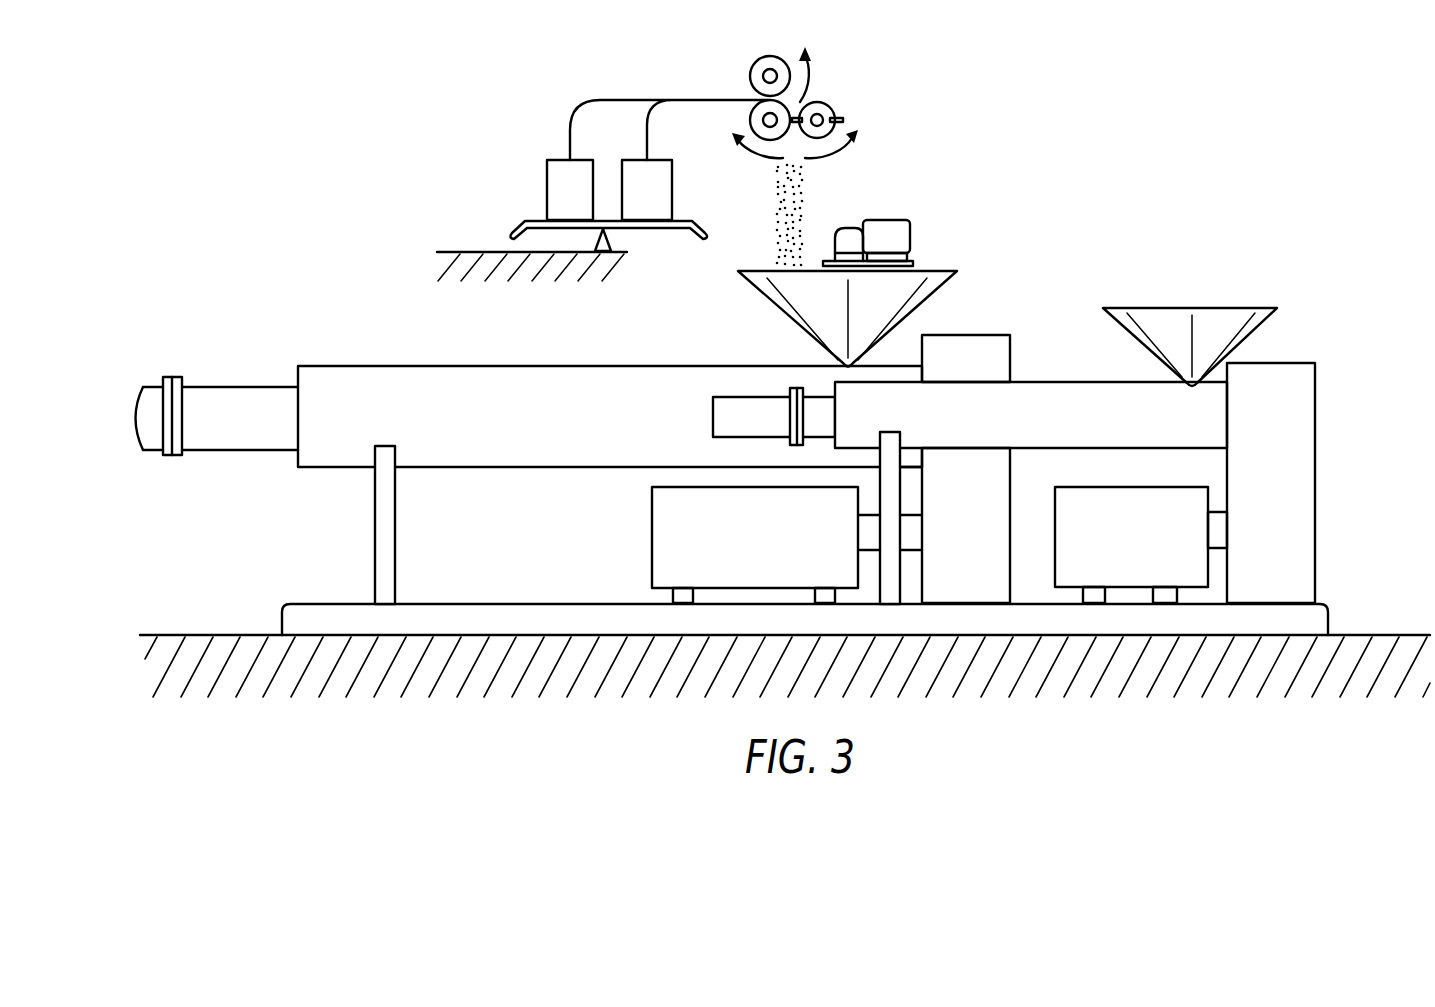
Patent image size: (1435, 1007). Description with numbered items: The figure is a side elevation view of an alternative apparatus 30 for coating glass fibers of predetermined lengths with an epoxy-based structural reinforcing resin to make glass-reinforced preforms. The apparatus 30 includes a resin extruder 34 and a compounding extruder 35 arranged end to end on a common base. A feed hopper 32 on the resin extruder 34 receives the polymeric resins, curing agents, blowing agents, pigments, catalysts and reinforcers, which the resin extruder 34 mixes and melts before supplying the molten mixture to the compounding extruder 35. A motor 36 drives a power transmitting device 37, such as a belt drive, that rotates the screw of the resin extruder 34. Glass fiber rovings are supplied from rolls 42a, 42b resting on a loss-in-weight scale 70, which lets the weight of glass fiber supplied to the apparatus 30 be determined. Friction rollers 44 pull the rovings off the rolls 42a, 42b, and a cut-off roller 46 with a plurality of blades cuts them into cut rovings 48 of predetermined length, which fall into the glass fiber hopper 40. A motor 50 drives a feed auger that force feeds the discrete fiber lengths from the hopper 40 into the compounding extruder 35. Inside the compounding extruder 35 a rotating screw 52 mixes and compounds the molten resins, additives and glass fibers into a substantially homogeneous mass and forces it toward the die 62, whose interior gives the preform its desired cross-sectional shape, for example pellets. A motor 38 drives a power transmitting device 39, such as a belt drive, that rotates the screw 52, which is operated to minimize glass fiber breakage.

The apparatus 30 is at (1250, 227).
The feed hopper 32 is at (1262, 306).
The resin extruder 34 is at (1093, 380).
The compounding extruder 35 is at (428, 365).
The motor 36 is at (1053, 572).
The power transmitting device 37 is at (1315, 447).
The motor 38 is at (650, 545).
The power transmitting device 39 is at (1010, 497).
The glass fiber hopper 40 is at (940, 270).
The roll of glass fiber rovings 42a is at (545, 193).
The roll of glass fiber rovings 42b is at (672, 188).
The friction rollers 44 is at (750, 120).
The cut-off roller 46 is at (832, 106).
The cut rovings 48 is at (790, 205).
The motor 50 is at (913, 230).
The rotating screw 52 is at (737, 397).
The die 62 is at (152, 450).
The loss-in-weight scale 70 is at (615, 242).